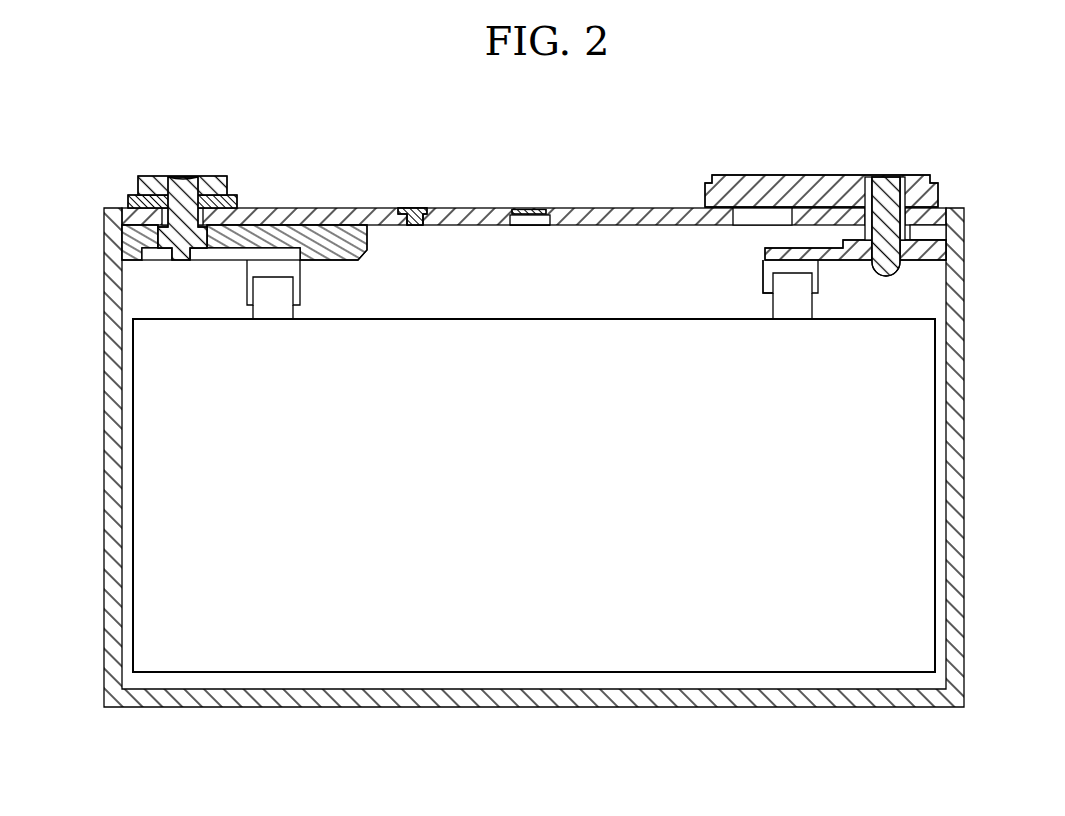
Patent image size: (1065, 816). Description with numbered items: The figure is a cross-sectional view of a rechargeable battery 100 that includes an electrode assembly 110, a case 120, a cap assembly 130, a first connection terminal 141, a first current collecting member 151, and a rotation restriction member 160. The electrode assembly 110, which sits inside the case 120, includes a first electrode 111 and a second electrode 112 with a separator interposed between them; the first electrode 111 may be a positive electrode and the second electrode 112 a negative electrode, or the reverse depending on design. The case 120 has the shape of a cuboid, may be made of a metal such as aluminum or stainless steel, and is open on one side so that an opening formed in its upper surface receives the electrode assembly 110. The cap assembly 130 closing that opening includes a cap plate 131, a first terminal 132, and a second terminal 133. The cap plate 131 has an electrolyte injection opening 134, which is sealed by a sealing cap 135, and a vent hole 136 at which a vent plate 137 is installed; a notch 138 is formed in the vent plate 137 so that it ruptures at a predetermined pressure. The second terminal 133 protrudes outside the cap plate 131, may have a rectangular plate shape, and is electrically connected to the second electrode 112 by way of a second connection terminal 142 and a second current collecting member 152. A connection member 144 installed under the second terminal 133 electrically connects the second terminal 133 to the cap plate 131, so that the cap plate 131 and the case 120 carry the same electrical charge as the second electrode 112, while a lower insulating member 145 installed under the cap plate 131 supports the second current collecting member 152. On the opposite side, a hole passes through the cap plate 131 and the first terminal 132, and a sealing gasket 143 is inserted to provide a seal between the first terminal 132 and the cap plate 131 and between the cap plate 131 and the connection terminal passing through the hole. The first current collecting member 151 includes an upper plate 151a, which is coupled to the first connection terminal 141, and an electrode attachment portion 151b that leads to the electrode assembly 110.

The rechargeable battery 100 is at (498, 92).
The electrode assembly 110 is at (600, 633).
The first electrode 111 is at (792, 288).
The second electrode 112 is at (272, 292).
The case 120 is at (958, 437).
The cap assembly 130 is at (562, 203).
The cap plate 131 is at (352, 215).
The first terminal 132 is at (915, 186).
The second terminal 133 is at (210, 184).
The electrolyte injection opening 134 is at (413, 226).
The sealing cap 135 is at (413, 208).
The vent hole 136 is at (528, 226).
The vent plate 137 is at (506, 207).
The notch 138 is at (527, 210).
The first connection terminal 141 is at (882, 178).
The second connection terminal 142 is at (181, 178).
The sealing gasket 143 is at (957, 205).
The connection member 144 is at (236, 200).
The lower insulating member 145 is at (140, 247).
The first current collecting member 151 is at (732, 122).
The upper plate 151a is at (803, 248).
The electrode attachment portion 151b is at (767, 278).
The second current collecting member 152 is at (284, 250).
The rotation restriction member 160 is at (922, 242).